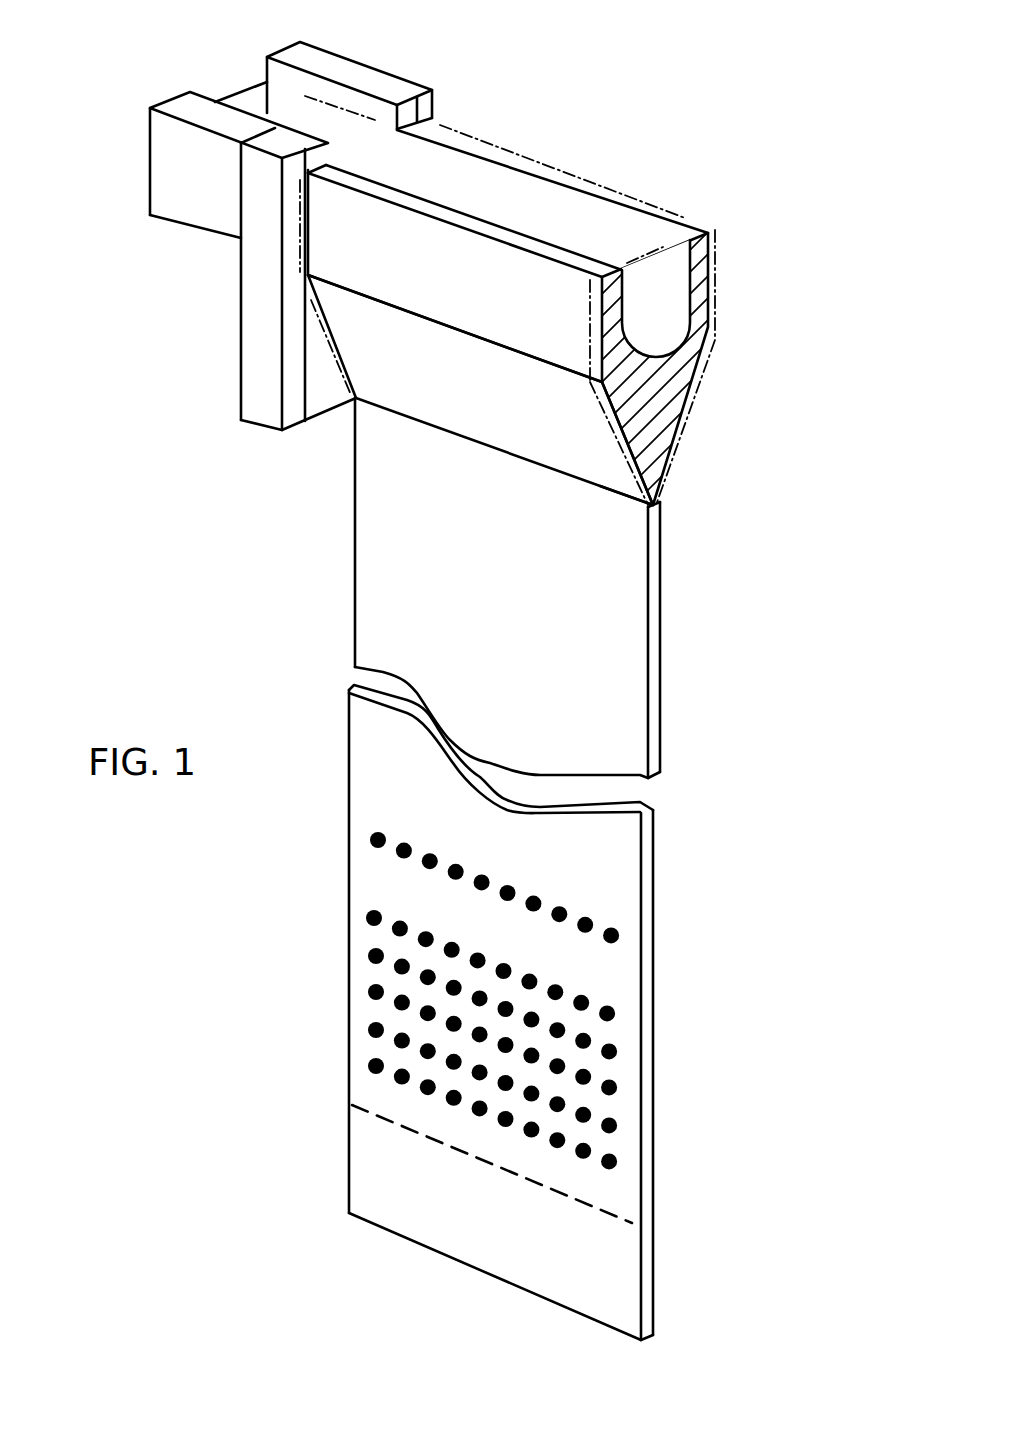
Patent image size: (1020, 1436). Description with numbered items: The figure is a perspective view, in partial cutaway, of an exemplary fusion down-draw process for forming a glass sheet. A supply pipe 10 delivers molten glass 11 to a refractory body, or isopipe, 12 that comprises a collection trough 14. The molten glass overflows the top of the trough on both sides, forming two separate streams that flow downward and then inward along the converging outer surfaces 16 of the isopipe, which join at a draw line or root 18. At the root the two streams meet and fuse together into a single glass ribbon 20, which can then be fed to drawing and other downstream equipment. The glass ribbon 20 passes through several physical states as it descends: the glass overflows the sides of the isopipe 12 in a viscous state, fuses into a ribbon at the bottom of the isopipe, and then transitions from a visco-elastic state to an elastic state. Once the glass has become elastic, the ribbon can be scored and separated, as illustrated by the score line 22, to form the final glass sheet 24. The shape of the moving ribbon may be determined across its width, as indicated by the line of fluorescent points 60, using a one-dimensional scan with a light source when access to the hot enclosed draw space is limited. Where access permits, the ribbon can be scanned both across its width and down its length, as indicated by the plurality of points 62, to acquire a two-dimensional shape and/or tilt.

The supply pipe 10 is at (183, 162).
The molten glass 11 is at (250, 97).
The refractory body (isopipe) 12 is at (668, 439).
The collection trough 14 is at (675, 305).
The converging outer surfaces 16 is at (523, 425).
The root (draw line) 18 is at (617, 497).
The glass ribbon 20 is at (380, 592).
The score line 22 is at (383, 1115).
The glass sheet 24 is at (363, 1180).
The line of fluorescent points 60 is at (356, 862).
The plurality of points 62 is at (352, 975).